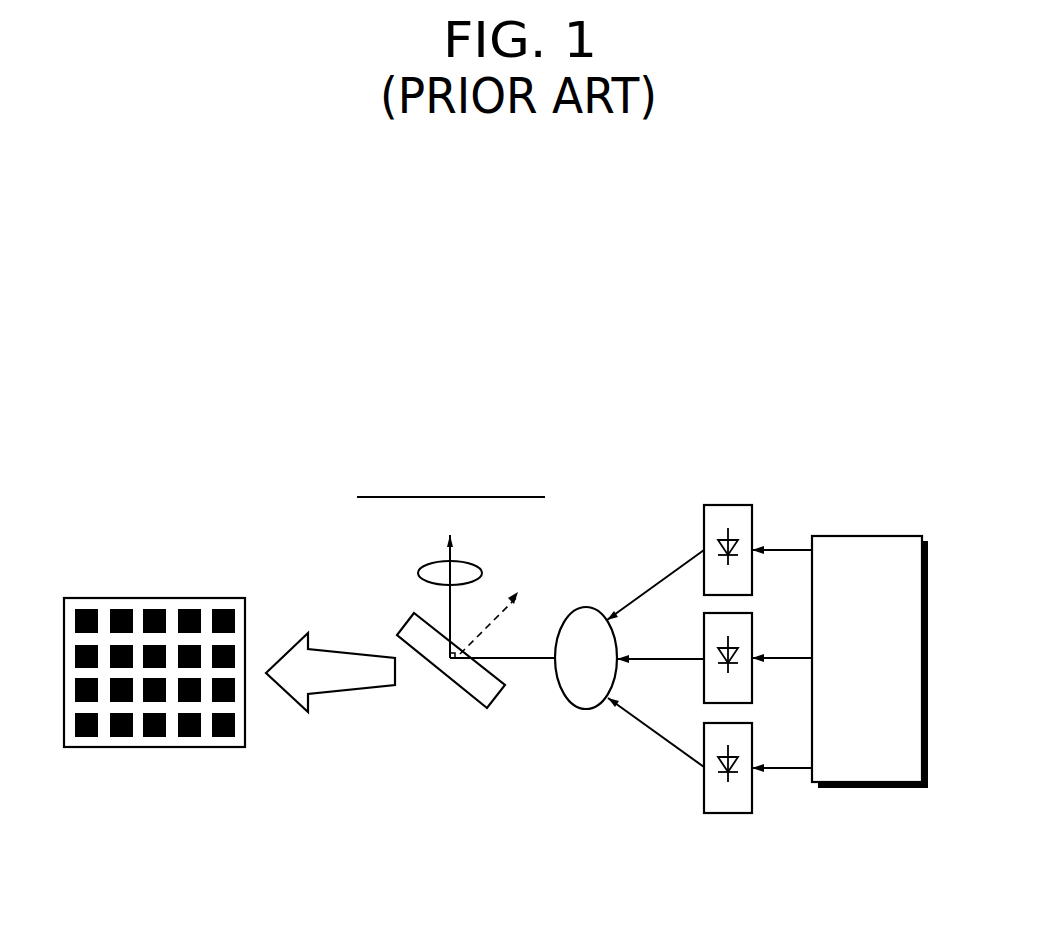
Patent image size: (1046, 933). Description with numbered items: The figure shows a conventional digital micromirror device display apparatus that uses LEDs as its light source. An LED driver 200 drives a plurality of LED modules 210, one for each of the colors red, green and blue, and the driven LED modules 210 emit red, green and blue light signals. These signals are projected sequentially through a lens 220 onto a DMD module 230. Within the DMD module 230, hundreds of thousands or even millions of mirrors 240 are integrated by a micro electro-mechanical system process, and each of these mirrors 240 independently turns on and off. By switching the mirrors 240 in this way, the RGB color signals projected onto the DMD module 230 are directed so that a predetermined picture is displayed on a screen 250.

The LED driver 200 is at (865, 536).
The LED modules 210 is at (722, 505).
The lens 220 is at (587, 607).
The DMD module 230 is at (525, 743).
The mirrors 240 is at (183, 608).
The screen 250 is at (500, 497).